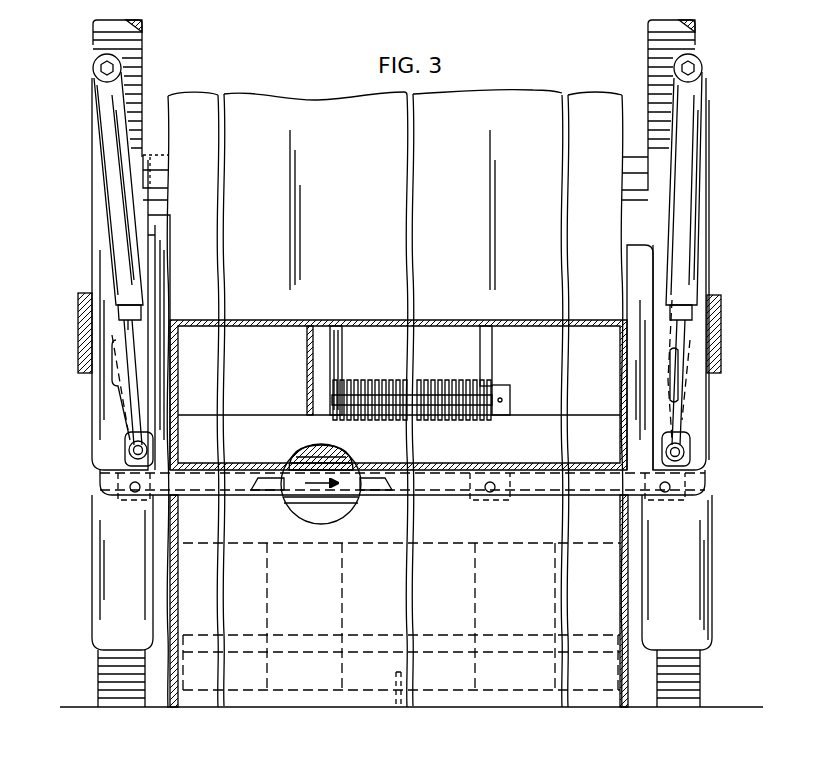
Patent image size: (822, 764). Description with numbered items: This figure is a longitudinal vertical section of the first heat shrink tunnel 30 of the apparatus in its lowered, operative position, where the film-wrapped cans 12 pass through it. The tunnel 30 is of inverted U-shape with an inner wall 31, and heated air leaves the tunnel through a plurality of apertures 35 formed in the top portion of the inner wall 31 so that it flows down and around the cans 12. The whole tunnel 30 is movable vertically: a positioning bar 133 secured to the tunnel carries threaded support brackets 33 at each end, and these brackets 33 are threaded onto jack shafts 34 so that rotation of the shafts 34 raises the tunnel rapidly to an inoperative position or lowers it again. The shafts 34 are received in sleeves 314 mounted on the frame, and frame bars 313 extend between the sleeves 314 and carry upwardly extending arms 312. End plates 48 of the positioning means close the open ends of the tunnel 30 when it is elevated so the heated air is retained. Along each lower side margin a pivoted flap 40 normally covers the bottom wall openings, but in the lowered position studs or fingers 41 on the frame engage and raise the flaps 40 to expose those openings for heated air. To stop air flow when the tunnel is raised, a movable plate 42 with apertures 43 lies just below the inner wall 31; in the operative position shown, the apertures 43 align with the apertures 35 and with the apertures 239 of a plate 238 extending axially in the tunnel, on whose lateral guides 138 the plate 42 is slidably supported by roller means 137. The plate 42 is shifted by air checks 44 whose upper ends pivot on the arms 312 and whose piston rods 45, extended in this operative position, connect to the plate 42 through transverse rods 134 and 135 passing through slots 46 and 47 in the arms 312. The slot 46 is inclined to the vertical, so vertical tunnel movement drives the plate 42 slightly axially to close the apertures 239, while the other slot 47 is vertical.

The cans 12 is at (555, 680).
The first heat shrink tunnel 30 is at (282, 92).
The inner wall 31 is at (330, 458).
The threaded support brackets 33 is at (150, 173).
The positioning bar 133 is at (170, 162).
The threaded jack shafts 34 is at (142, 64).
The apertures 35 is at (345, 463).
The flap 40 is at (288, 635).
The studs or fingers 41 is at (395, 678).
The plate 42 is at (352, 497).
The apertures 43 is at (302, 489).
The positioning cylinders or air checks 44 is at (115, 190).
The piston rods 45 is at (135, 349).
The slot 46 is at (110, 378).
The slot 47 is at (676, 385).
The end plates 48 is at (170, 262).
The transversely extending rod 134 is at (128, 452).
The transversely extending rod 135 is at (685, 452).
The roller means 137 is at (125, 497).
The guides 138 is at (330, 508).
The plate 238 is at (318, 452).
The apertures 239 is at (300, 462).
The upwardly extending arms 312 is at (92, 140).
The frame bars 313 is at (78, 342).
The sleeves 314 is at (105, 585).